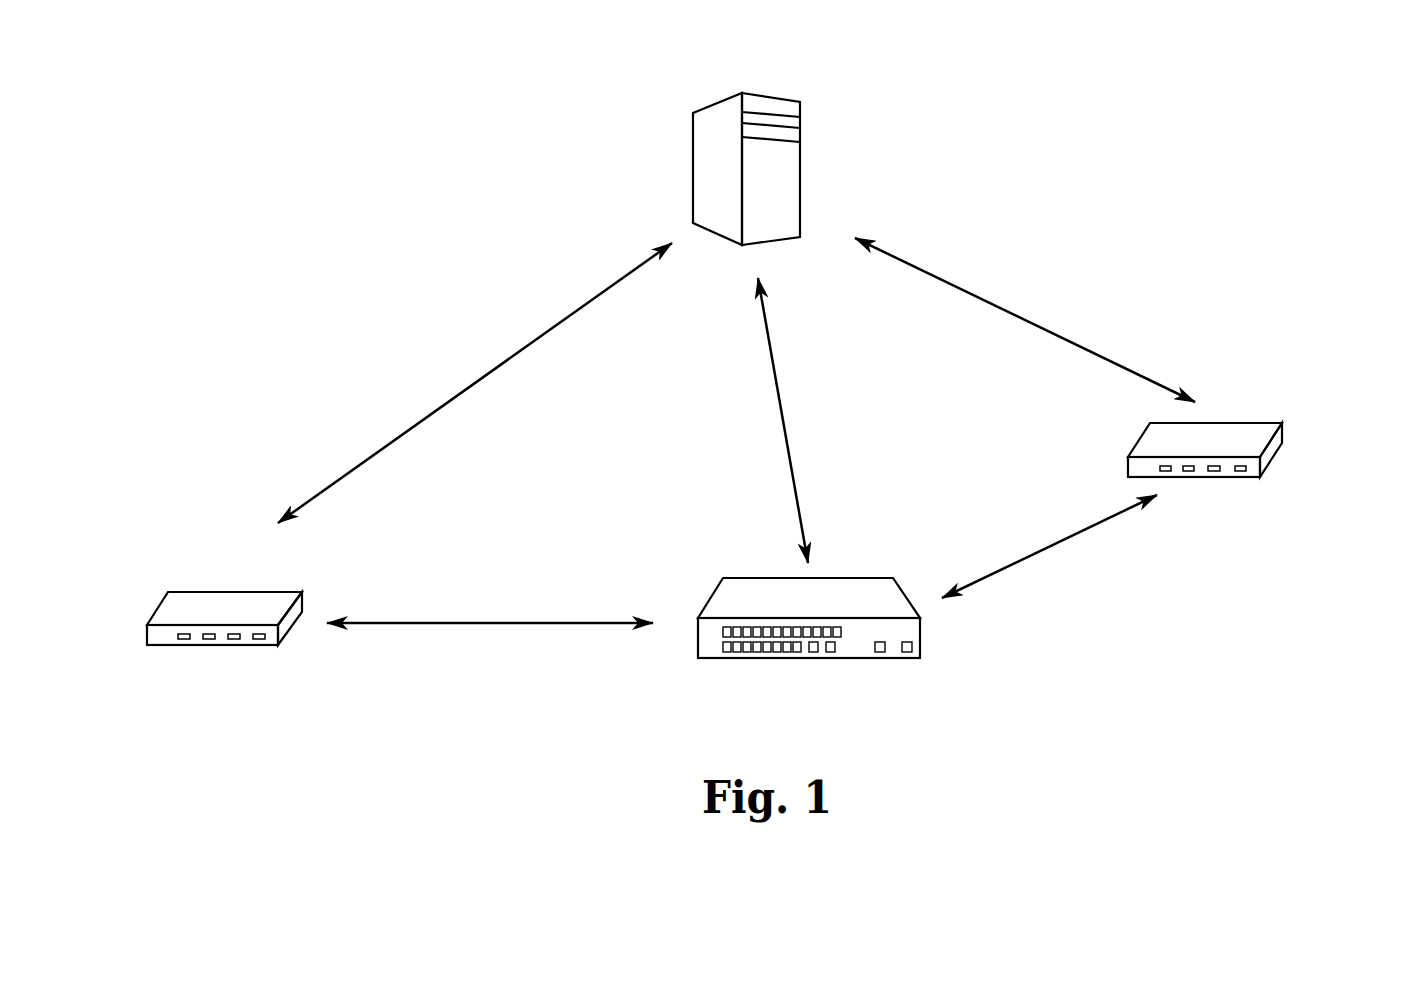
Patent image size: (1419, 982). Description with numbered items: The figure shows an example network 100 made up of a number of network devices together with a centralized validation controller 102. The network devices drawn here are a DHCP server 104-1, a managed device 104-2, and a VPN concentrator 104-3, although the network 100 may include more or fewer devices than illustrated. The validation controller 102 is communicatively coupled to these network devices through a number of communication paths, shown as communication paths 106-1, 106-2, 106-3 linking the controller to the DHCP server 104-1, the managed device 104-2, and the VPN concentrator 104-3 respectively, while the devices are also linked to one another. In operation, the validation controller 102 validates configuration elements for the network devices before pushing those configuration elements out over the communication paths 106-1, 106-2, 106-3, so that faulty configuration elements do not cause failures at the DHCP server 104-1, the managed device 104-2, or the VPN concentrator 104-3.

The network 100 is at (1140, 93).
The validation controller 102 is at (772, 93).
The DHCP server 104-1 is at (222, 592).
The managed device 104-2 is at (857, 578).
The VPN concentrator 104-3 is at (1240, 423).
The communication path 106-1 is at (478, 378).
The communication path 106-2 is at (780, 397).
The communication path 106-3 is at (1015, 288).